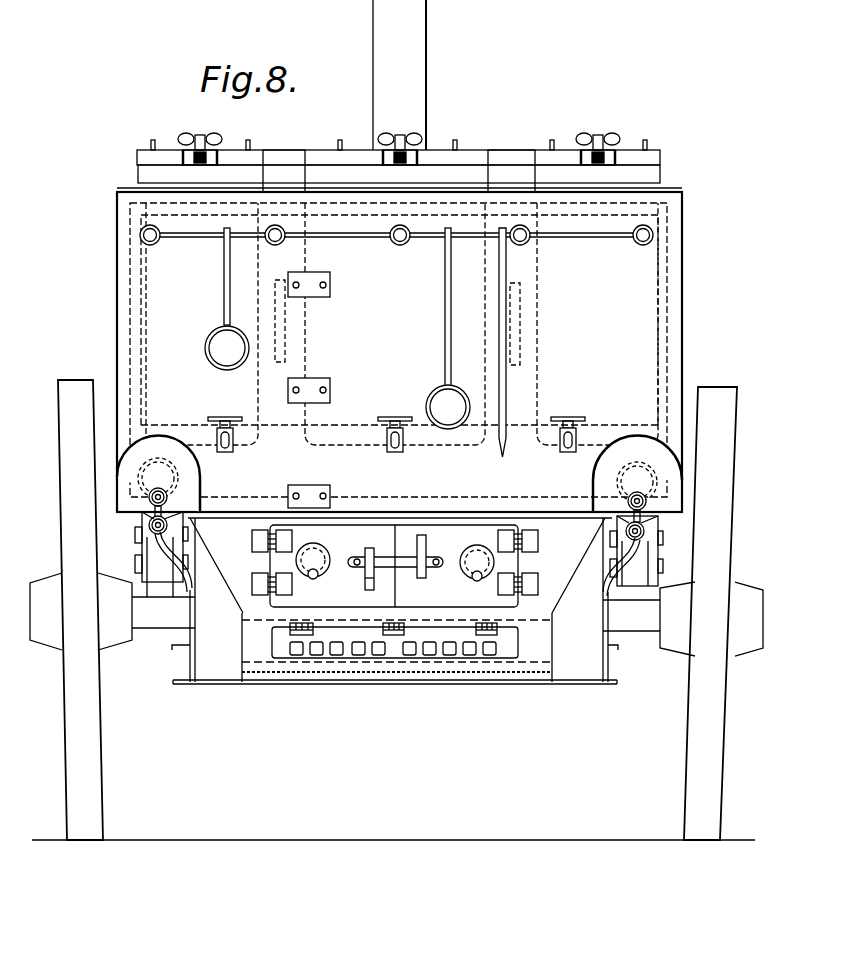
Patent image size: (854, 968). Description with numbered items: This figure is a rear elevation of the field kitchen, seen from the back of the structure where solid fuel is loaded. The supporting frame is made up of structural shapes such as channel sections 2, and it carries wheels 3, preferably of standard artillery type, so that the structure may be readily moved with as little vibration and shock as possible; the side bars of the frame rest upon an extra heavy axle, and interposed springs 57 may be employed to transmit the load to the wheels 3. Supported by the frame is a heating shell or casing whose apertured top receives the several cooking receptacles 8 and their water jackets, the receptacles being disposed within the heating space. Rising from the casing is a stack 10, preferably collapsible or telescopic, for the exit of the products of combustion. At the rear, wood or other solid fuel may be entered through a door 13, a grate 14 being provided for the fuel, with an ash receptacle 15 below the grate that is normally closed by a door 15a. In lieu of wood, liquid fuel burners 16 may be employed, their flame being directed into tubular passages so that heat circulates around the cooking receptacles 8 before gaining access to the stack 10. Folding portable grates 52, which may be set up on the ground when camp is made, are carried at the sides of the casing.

The channel sections 2 is at (396, 664).
The wheels 3 is at (396, 610).
The cooking receptacles 8 is at (138, 323).
The stack 10 is at (399, 75).
The door 13 is at (395, 566).
The grate 14 is at (243, 620).
The ash receptacle 15 is at (530, 683).
The door 15a is at (505, 641).
The liquid fuel burners 16 is at (657, 527).
The folding portable grates 52 is at (399, 159).
The springs 57 is at (399, 554).